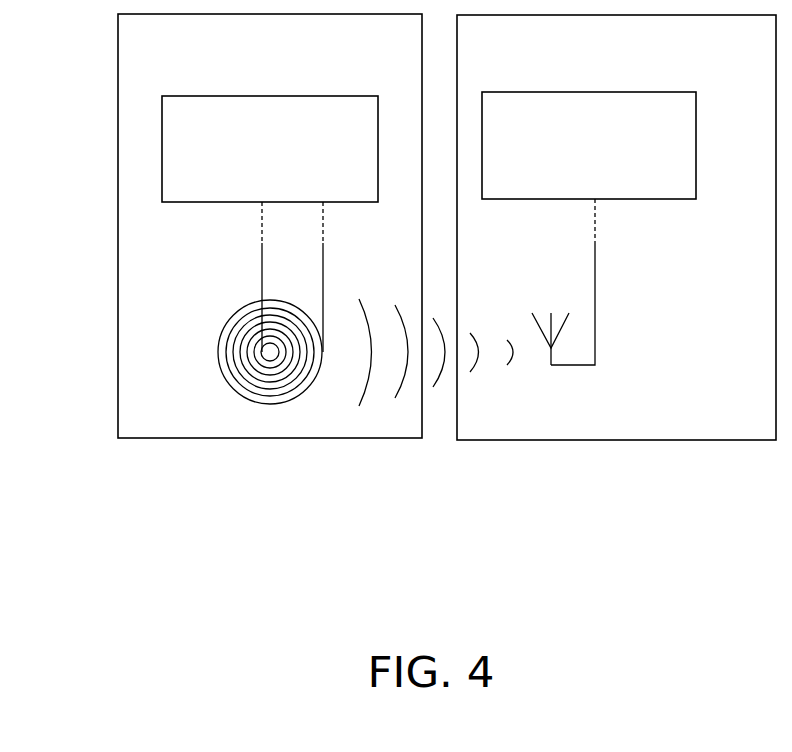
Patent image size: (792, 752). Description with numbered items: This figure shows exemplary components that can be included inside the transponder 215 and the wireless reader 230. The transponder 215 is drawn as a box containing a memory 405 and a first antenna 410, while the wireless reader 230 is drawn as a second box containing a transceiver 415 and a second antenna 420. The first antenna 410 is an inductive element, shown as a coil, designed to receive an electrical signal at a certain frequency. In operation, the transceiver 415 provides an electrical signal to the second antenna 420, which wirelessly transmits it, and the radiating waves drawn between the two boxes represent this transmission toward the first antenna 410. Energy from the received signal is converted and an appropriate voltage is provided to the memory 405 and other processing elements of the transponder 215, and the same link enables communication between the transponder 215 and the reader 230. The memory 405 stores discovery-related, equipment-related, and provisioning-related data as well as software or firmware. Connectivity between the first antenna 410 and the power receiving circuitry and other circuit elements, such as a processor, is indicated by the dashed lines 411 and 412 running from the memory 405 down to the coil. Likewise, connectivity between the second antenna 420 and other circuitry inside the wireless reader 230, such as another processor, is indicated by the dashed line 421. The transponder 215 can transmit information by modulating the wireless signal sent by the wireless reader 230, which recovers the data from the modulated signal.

The transponder 215 is at (408, 56).
The memory 405 is at (368, 127).
The dashed line 411 is at (255, 223).
The dashed line 412 is at (331, 223).
The first antenna 410 is at (205, 351).
The wireless reader 230 is at (762, 64).
The transceiver 415 is at (688, 126).
The dashed line 421 is at (609, 216).
The second antenna 420 is at (551, 298).